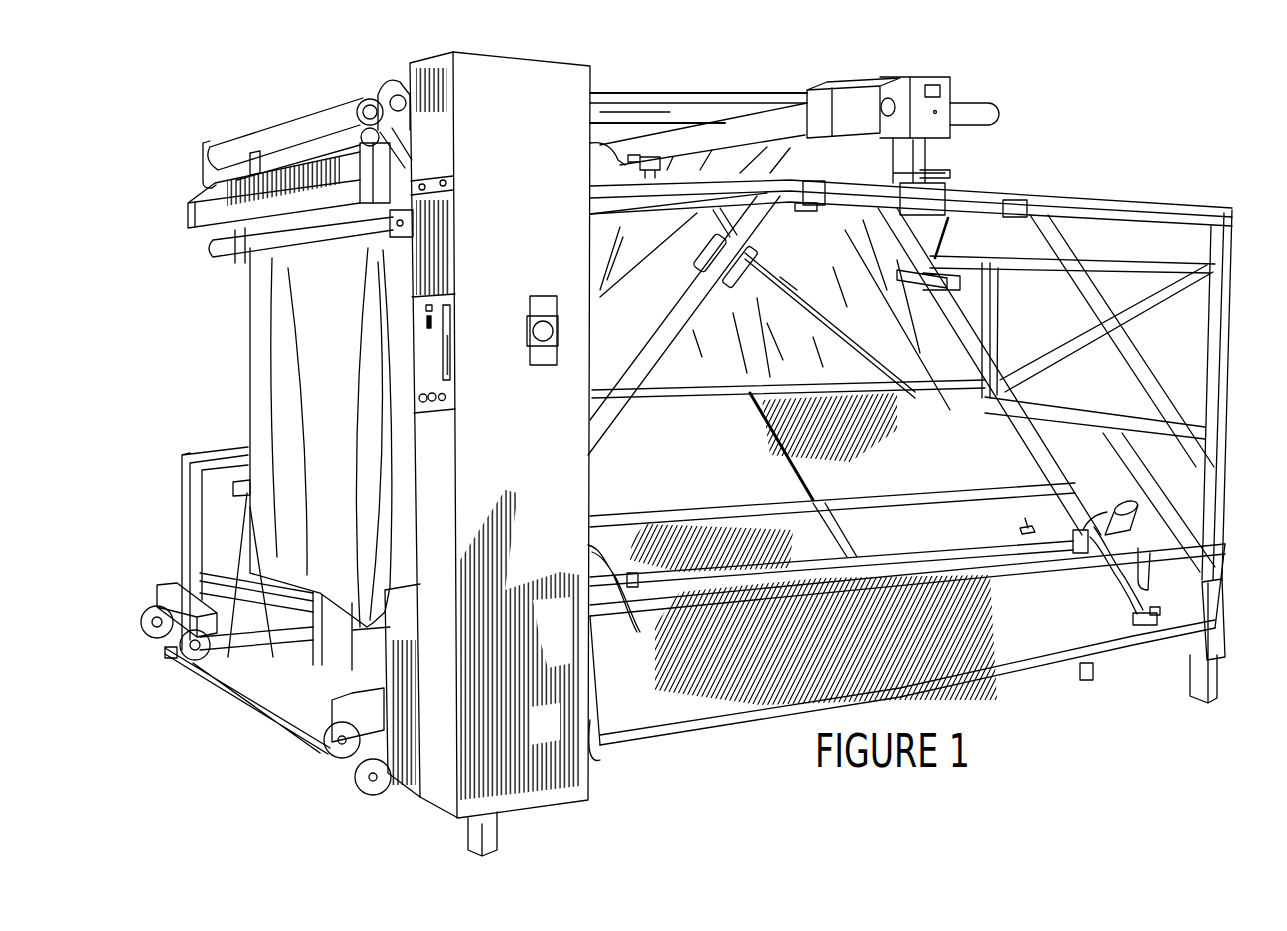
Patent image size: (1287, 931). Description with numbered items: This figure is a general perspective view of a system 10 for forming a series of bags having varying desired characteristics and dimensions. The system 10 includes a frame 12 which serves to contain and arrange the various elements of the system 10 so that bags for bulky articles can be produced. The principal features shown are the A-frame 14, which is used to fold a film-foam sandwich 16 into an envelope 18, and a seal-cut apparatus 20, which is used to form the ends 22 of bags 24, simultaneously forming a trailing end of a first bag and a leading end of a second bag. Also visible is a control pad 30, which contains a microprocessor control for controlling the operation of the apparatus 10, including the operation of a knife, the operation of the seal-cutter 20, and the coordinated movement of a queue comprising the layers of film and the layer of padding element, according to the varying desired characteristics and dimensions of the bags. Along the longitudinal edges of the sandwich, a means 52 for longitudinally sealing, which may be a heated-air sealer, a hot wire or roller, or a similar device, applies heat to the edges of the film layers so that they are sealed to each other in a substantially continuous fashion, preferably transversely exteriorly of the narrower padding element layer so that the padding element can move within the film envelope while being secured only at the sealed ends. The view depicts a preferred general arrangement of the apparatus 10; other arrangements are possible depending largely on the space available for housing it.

The system 10 is at (1125, 107).
The frame 12 is at (1215, 215).
The A-frame 14 is at (910, 390).
The film-foam sandwich 16 is at (704, 466).
The envelope 18 is at (712, 113).
The seal-cut apparatus 20 is at (177, 128).
The ends 22 is at (341, 612).
The bags 24 is at (341, 382).
The control pad 30 is at (445, 410).
The means for longitudinally sealing 52 is at (1100, 583).